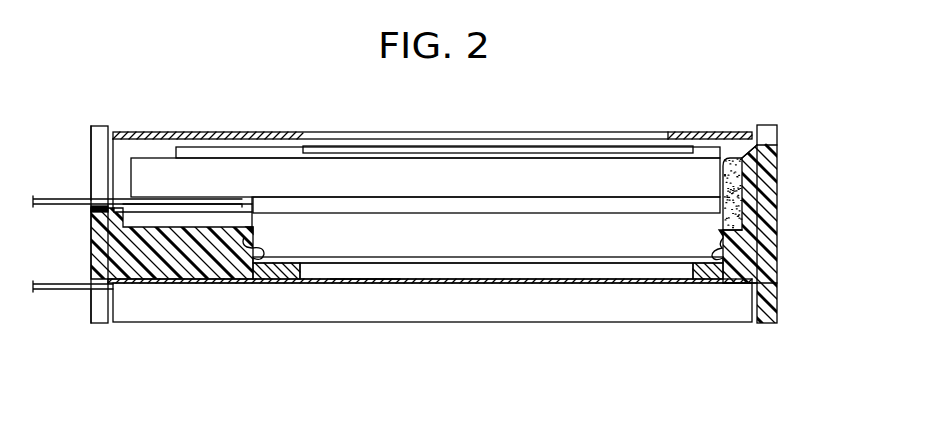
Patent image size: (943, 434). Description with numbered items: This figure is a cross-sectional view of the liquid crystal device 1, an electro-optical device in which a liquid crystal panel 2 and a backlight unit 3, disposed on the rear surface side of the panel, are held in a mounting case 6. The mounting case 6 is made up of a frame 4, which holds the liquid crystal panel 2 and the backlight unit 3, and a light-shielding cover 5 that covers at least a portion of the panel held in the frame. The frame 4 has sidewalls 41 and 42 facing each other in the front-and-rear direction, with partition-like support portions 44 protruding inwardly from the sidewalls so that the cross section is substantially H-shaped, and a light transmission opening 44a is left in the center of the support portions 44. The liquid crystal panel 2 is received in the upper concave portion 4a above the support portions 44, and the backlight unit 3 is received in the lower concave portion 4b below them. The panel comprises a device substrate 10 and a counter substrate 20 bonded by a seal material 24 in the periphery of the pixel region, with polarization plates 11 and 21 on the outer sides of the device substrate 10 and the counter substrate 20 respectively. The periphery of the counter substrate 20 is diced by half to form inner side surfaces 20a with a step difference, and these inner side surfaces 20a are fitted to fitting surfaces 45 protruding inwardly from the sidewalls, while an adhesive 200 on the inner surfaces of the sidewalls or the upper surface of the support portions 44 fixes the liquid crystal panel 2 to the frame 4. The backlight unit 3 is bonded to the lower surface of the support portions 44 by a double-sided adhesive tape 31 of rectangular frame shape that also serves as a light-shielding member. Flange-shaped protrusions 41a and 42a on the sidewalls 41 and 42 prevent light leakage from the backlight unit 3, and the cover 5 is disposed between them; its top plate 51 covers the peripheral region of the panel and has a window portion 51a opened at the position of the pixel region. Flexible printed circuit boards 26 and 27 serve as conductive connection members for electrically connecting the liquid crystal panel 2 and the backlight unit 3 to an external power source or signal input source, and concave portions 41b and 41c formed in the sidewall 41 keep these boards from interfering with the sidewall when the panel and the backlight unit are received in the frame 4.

The liquid crystal device 1 is at (130, 98).
The liquid crystal panel 2 is at (340, 152).
The backlight unit 3 is at (575, 300).
The frame 4 is at (781, 131).
The concave portion 4a is at (737, 165).
The concave portion 4b is at (740, 324).
The cover 5 is at (245, 132).
The mounting case 6 is at (190, 131).
The device substrate 10 is at (395, 176).
The polarization plate 11 is at (545, 150).
The counter substrate 20 is at (455, 238).
The inner side surface 20a is at (256, 232).
The polarization plate 21 is at (520, 264).
The seal material 24 is at (472, 205).
The flexible printed circuit board 26 is at (52, 207).
The flexible printed circuit board 27 is at (50, 292).
The double-sided adhesive tape 31 is at (160, 285).
The sidewall 41 is at (95, 136).
The flange-shaped protrusion 41a is at (102, 315).
The concave portion 41b is at (95, 175).
The concave portion 41c is at (90, 298).
The sidewall 42 is at (760, 195).
The flange-shaped protrusion 42a is at (765, 127).
The support portion 44 is at (290, 270).
The light transmission opening 44a is at (366, 281).
The fitting surface 45 is at (252, 254).
The top plate 51 is at (700, 133).
The window portion 51a is at (668, 133).
The adhesive 200 is at (255, 228).